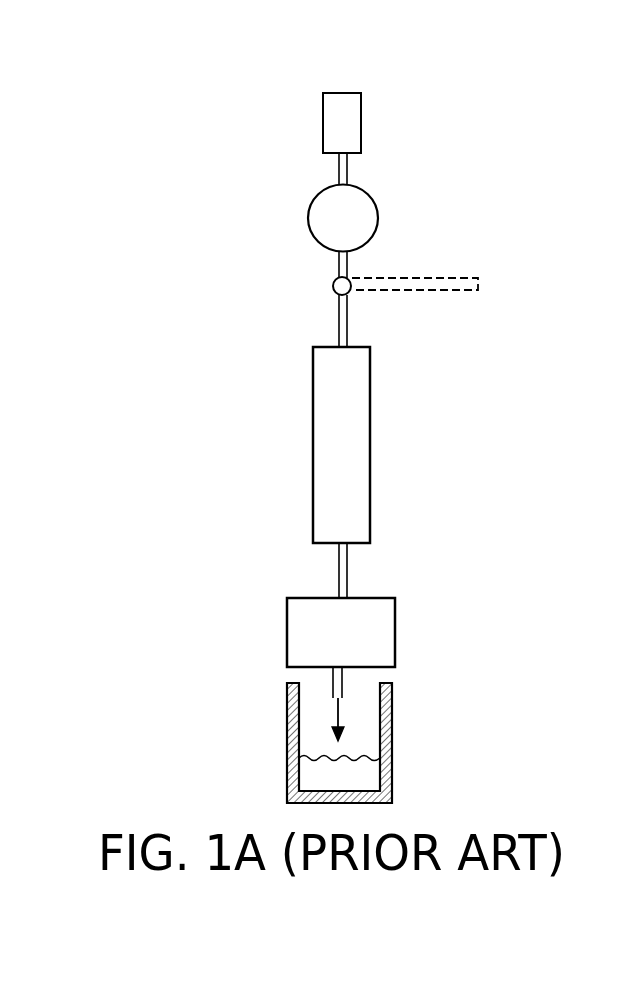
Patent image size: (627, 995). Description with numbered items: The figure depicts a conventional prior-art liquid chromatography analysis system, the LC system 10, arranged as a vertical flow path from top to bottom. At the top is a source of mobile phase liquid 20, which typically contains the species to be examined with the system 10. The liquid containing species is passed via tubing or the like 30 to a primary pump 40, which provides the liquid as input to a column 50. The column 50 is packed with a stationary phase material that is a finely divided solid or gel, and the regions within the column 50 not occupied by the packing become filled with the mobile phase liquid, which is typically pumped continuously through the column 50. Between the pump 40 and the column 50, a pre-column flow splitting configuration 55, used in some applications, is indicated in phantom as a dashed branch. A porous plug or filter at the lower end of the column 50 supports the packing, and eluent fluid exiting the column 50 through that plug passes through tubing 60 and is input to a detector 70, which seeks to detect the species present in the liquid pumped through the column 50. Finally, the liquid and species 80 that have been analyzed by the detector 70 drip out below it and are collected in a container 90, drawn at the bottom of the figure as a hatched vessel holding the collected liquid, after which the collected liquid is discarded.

The LC system 10 is at (430, 192).
The source of mobile phase liquid 20 is at (328, 122).
The tubing 30 is at (337, 175).
The primary pump 40 is at (308, 232).
The column 50 is at (375, 375).
The pre-column flow splitting configuration 55 is at (380, 260).
The tubing 60 is at (342, 570).
The detector 70 is at (395, 623).
The liquid and species 80 is at (362, 753).
The waste container 90 is at (395, 747).